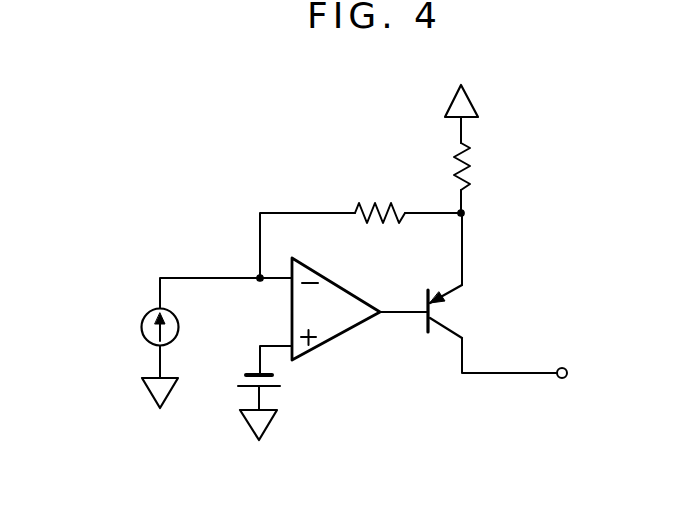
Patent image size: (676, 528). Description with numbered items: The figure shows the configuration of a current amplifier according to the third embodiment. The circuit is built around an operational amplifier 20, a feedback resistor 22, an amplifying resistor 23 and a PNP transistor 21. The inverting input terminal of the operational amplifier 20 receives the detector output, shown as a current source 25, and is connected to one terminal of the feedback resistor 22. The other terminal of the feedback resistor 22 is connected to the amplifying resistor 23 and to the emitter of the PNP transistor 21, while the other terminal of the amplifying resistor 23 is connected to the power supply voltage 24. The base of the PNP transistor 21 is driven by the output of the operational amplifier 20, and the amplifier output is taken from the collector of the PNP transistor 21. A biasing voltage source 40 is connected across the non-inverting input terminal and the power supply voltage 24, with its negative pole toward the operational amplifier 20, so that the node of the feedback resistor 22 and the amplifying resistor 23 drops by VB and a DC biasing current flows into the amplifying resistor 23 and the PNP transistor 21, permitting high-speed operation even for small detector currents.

The operational amplifier 20 is at (330, 345).
The PNP transistor 21 is at (450, 322).
The feedback resistor 22 is at (390, 203).
The amplifying resistor 23 is at (470, 172).
The power supply voltage 24 is at (473, 98).
The current source 25 is at (140, 330).
The biasing voltage source 40 is at (278, 380).